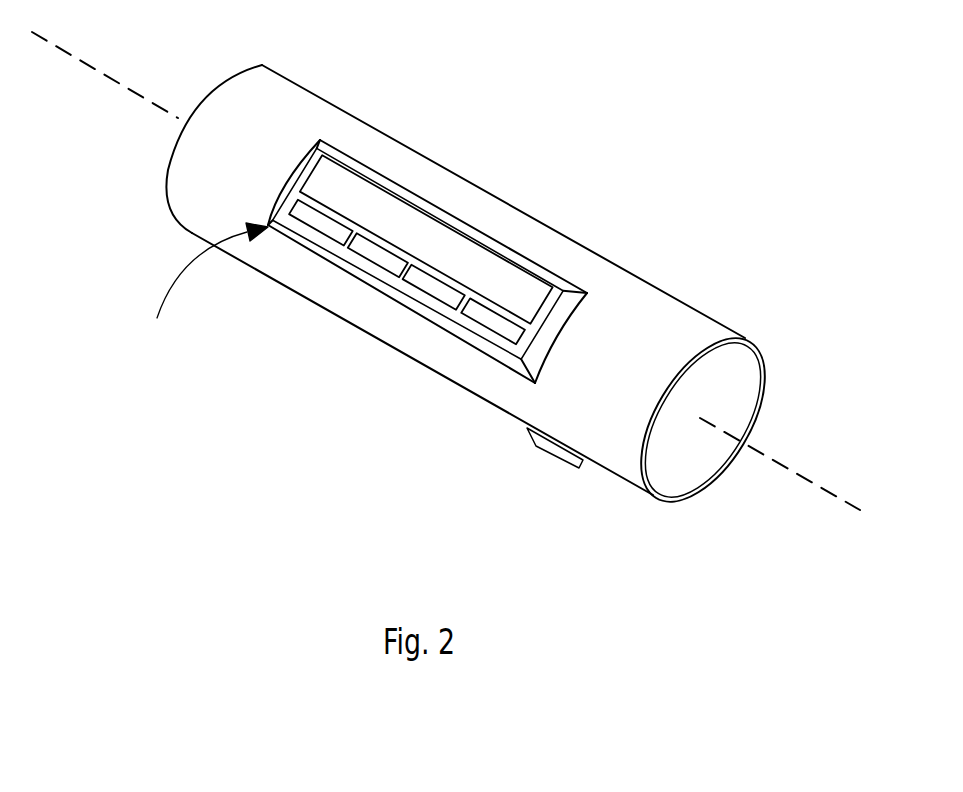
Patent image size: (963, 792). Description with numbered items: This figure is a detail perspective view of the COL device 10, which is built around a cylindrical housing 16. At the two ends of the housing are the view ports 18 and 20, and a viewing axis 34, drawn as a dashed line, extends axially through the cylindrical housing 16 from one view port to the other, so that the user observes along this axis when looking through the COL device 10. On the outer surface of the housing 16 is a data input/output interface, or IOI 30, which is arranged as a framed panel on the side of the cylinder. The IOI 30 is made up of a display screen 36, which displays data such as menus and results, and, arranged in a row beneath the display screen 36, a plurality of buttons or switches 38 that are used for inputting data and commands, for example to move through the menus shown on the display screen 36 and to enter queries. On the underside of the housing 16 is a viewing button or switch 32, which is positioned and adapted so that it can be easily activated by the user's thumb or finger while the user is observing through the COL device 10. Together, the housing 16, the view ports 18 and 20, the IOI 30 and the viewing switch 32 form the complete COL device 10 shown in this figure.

The COL device 10 is at (663, 95).
The housing 16 is at (397, 350).
The view port 18 is at (755, 342).
The view port 20 is at (249, 62).
The data input/output interface (IOI) 30 is at (198, 282).
The viewing button or switch 32 is at (535, 445).
The viewing axis 34 is at (88, 66).
The display screen 36 is at (340, 163).
The buttons or switches 38 is at (417, 291).